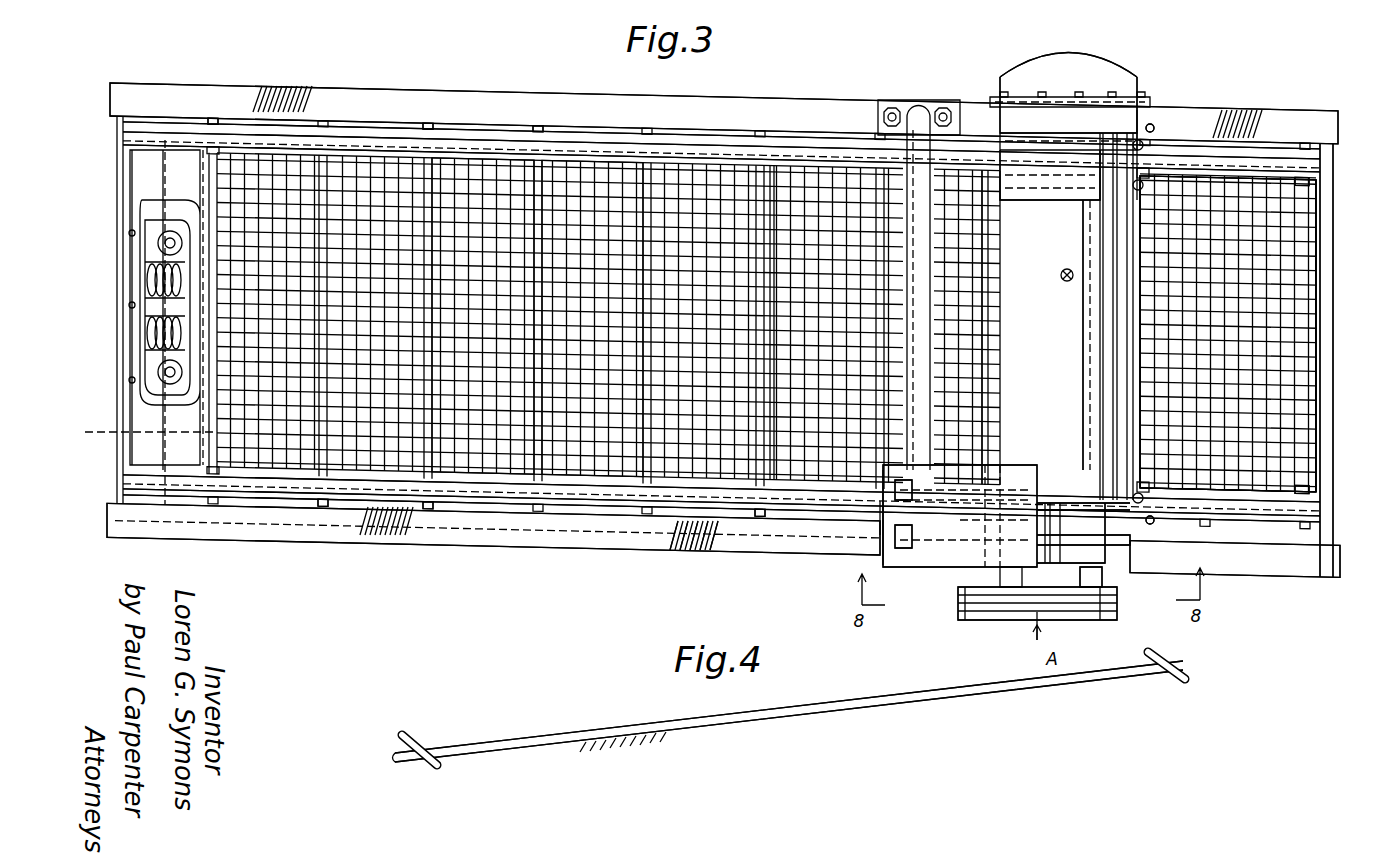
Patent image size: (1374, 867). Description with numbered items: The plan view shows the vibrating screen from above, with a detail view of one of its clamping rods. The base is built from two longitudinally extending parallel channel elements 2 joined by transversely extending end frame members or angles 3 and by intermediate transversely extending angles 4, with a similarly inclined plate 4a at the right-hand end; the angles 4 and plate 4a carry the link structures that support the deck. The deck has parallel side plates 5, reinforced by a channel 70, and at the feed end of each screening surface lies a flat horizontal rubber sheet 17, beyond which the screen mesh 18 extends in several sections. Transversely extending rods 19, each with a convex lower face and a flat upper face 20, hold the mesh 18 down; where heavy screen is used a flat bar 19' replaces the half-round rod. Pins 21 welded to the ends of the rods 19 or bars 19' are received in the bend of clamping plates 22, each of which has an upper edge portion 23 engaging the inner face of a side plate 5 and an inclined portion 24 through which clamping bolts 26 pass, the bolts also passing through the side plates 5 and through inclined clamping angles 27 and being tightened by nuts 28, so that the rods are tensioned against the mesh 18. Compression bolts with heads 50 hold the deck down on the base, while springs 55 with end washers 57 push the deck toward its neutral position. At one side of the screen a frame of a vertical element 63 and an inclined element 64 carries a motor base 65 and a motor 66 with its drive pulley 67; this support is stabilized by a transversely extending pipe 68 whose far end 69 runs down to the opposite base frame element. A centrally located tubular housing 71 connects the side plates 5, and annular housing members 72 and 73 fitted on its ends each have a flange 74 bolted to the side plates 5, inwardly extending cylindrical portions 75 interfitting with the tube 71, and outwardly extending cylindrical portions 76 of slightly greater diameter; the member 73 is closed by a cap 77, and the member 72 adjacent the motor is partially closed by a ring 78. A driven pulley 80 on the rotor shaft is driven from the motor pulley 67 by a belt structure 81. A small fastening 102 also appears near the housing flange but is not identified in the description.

In FIG. 3, the channel element 2 is at (815, 122).
In FIG. 3, the end frame member 3 is at (1336, 158).
In FIG. 3, the intermediate transversely extending angle 4 is at (300, 112).
In FIG. 3, the inclined plate 4a is at (1292, 140).
In FIG. 3, the side plate 5 is at (730, 152).
In FIG. 3, the rubber sheet 17 is at (152, 172).
In FIG. 3, the screen mesh 18 is at (1262, 365).
In FIG. 3, the rod 19 is at (726, 330).
In FIG. 4, the rod 19 is at (788, 718).
In FIG. 3, the flat bar 19' is at (630, 311).
In FIG. 4, the flat upper face 20 is at (530, 742).
In FIG. 4, the pin 21 is at (418, 742).
In FIG. 3, the clamping plate 22 is at (583, 158).
In FIG. 3, the upper edge portion 23 is at (1310, 166).
In FIG. 3, the inclined portion 24 is at (1300, 196).
In FIG. 3, the clamping bolt 26 is at (333, 152).
In FIG. 3, the inclined clamping angle 27 is at (686, 142).
In FIG. 3, the nut 28 is at (537, 128).
In FIG. 3, the bolt head 50 is at (165, 246).
In FIG. 3, the spring 55 is at (150, 292).
In FIG. 3, the end washer 57 is at (148, 282).
In FIG. 3, the vertical frame element 63 is at (935, 570).
In FIG. 3, the inclined element 64 is at (786, 542).
In FIG. 3, the motor base 65 is at (878, 547).
In FIG. 3, the motor 66 is at (965, 547).
In FIG. 3, the drive pulley 67 is at (978, 612).
In FIG. 3, the transversely extending pipe 68 is at (942, 122).
In FIG. 3, the far end of pipe 69 is at (917, 108).
In FIG. 3, the reinforcing channel 70 is at (652, 138).
In FIG. 3, the tubular housing 71 is at (1065, 335).
In FIG. 3, the annular housing member 72 is at (1108, 562).
In FIG. 3, the annular housing member 73 is at (1158, 130).
In FIG. 3, the flange 74 is at (1177, 150).
In FIG. 3, the inwardly extending cylindrical portion 75 is at (1065, 186).
In FIG. 3, the outwardly extending cylindrical portion 76 is at (1107, 115).
In FIG. 3, the cap 77 is at (1072, 66).
In FIG. 3, the plate or ring 78 is at (1120, 557).
In FIG. 3, the driven pulley 80 is at (1090, 620).
In FIG. 3, the belt structure 81 is at (1040, 633).
In FIG. 3, the bolt 102 is at (1152, 126).